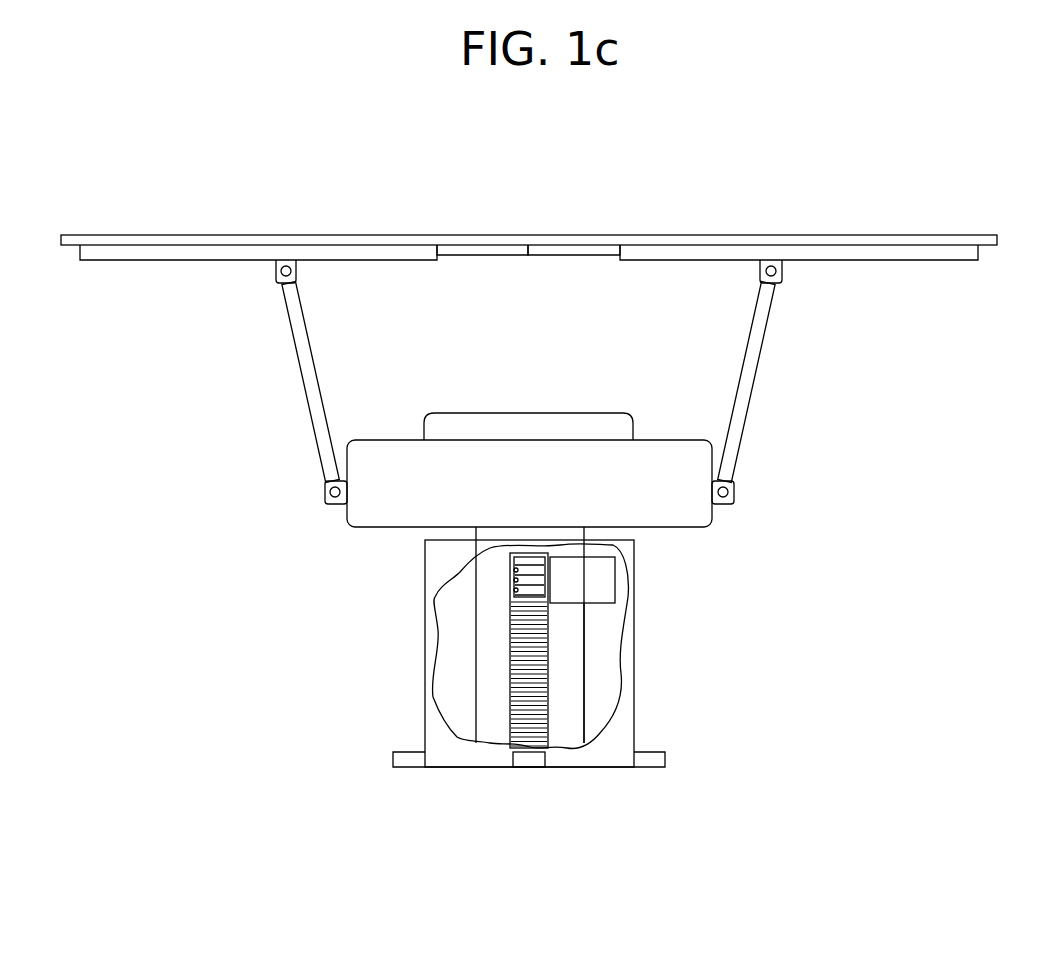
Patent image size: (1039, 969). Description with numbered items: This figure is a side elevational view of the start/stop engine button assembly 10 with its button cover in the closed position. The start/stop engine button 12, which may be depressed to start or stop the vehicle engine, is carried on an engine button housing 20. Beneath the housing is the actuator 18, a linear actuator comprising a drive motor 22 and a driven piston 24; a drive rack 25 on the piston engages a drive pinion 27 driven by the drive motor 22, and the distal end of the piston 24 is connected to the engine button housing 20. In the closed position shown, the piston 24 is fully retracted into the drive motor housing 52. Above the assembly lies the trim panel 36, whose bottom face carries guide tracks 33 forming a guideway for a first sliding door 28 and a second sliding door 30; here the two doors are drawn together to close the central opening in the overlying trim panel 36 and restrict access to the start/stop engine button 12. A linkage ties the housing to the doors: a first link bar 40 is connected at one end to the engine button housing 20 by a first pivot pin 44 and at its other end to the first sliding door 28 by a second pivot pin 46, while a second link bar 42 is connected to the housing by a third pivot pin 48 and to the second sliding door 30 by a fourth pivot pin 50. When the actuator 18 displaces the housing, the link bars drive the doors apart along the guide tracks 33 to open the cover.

The start/stop engine button assembly 10 is at (778, 148).
The start/stop engine button 12 is at (517, 413).
The actuator 18 is at (362, 722).
The engine button housing 20 is at (412, 507).
The drive motor 22 is at (595, 597).
The driven piston 24 is at (567, 658).
The drive rack 25 is at (528, 725).
The drive pinion 27 is at (513, 592).
The first sliding door 28 is at (475, 250).
The second sliding door 30 is at (567, 250).
The guide tracks 33 is at (147, 256).
The trim panel 36 is at (846, 235).
The first link bar 40 is at (315, 382).
The second link bar 42 is at (743, 367).
The first pivot pin 44 is at (327, 498).
The second pivot pin 46 is at (277, 278).
The third pivot pin 48 is at (733, 498).
The fourth pivot pin 50 is at (782, 285).
The drive motor housing 52 is at (625, 722).